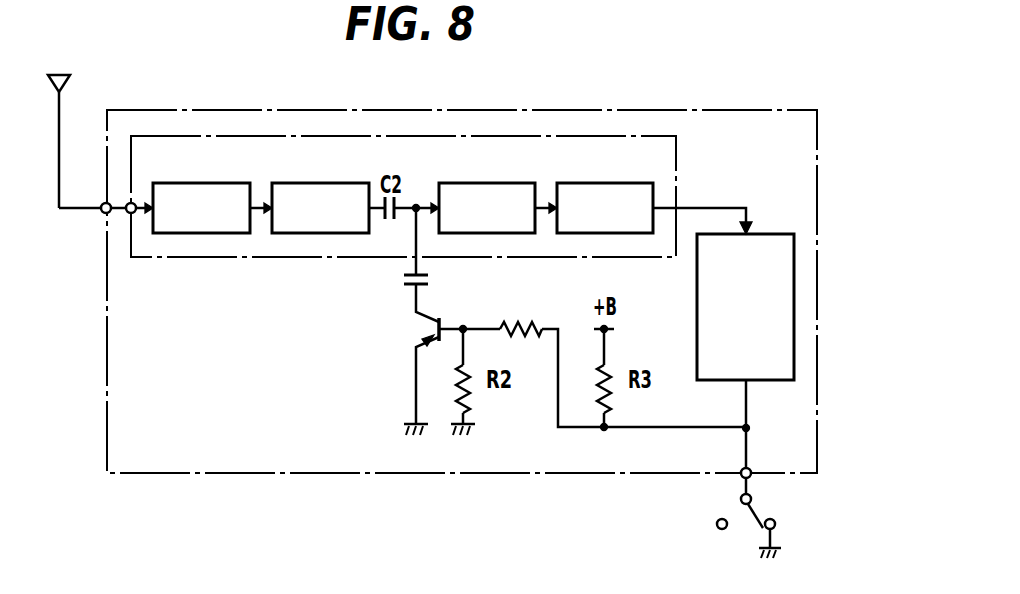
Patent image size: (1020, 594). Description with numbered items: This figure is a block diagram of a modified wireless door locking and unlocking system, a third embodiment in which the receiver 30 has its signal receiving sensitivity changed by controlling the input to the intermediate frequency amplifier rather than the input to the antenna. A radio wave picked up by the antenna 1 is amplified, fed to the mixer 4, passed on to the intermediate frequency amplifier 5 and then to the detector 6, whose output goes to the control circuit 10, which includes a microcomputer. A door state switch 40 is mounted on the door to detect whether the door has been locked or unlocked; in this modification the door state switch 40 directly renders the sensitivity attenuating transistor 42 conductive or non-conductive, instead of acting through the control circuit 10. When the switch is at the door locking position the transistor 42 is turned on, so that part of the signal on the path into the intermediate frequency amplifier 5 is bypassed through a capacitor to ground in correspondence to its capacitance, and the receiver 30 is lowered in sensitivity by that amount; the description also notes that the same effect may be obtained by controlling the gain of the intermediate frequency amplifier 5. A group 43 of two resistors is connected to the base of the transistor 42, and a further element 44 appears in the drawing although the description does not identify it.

The antenna 1 is at (70, 85).
The mixer 4 is at (356, 183).
The intermediate frequency (IF) amplifier 5 is at (521, 183).
The detector 6 is at (639, 183).
The control circuit 10 is at (776, 234).
The receiver 30 is at (691, 102).
The door state switch 40 is at (732, 505).
The transistor 42 is at (416, 330).
The group of resistors 43 is at (404, 294).
The resistor R1 44 is at (513, 323).